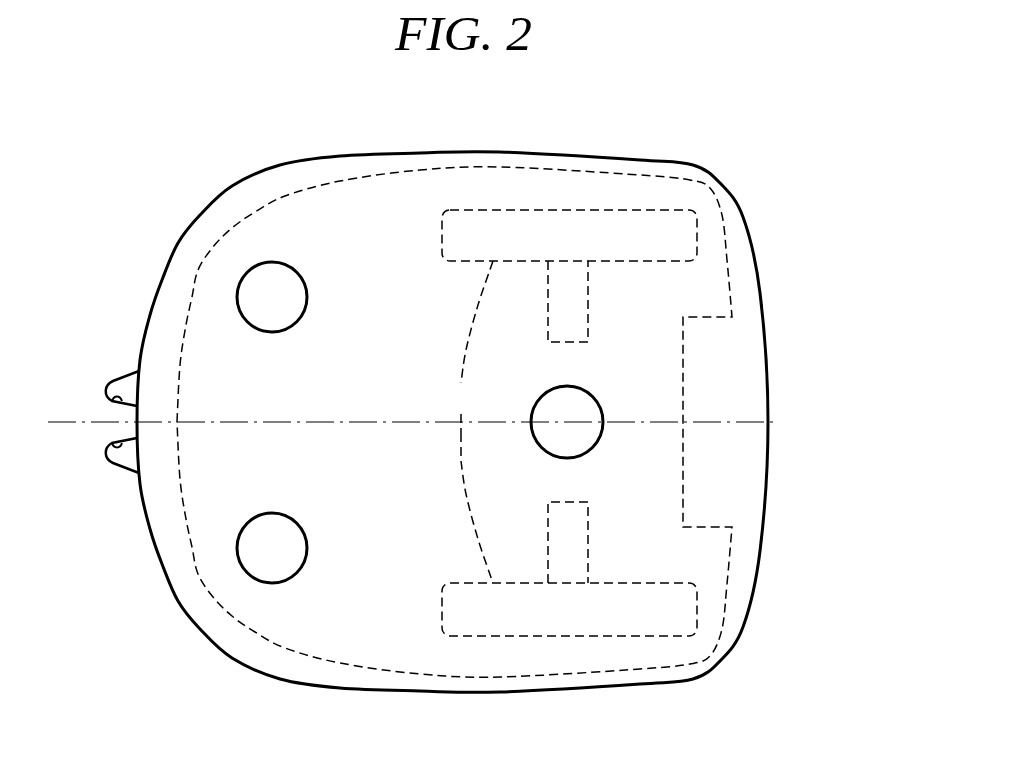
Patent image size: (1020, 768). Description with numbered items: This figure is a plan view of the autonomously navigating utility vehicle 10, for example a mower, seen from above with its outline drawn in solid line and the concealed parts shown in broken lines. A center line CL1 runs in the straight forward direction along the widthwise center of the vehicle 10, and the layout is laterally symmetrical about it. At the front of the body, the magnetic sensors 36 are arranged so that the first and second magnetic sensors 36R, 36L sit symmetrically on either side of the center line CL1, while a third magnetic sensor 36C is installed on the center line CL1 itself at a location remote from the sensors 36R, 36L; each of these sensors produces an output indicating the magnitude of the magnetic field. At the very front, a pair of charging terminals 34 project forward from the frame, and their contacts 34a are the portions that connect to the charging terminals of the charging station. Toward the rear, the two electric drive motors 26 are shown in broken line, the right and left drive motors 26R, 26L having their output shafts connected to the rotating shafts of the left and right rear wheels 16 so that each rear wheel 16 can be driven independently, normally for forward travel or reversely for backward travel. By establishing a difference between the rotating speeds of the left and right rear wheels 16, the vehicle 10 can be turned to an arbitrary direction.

The utility vehicle 10 is at (696, 154).
The rear wheels 16 is at (470, 422).
The drive motors 26 is at (661, 423).
The right drive motor 26R is at (588, 292).
The left drive motor 26L is at (588, 527).
The charging terminals 34 is at (109, 388).
The contacts 34a is at (112, 446).
The magnetic sensors 36 is at (256, 422).
The first magnetic sensor 36R is at (272, 333).
The second magnetic sensor 36L is at (272, 512).
The third magnetic sensor 36C is at (599, 403).
The center line CL1 is at (440, 422).